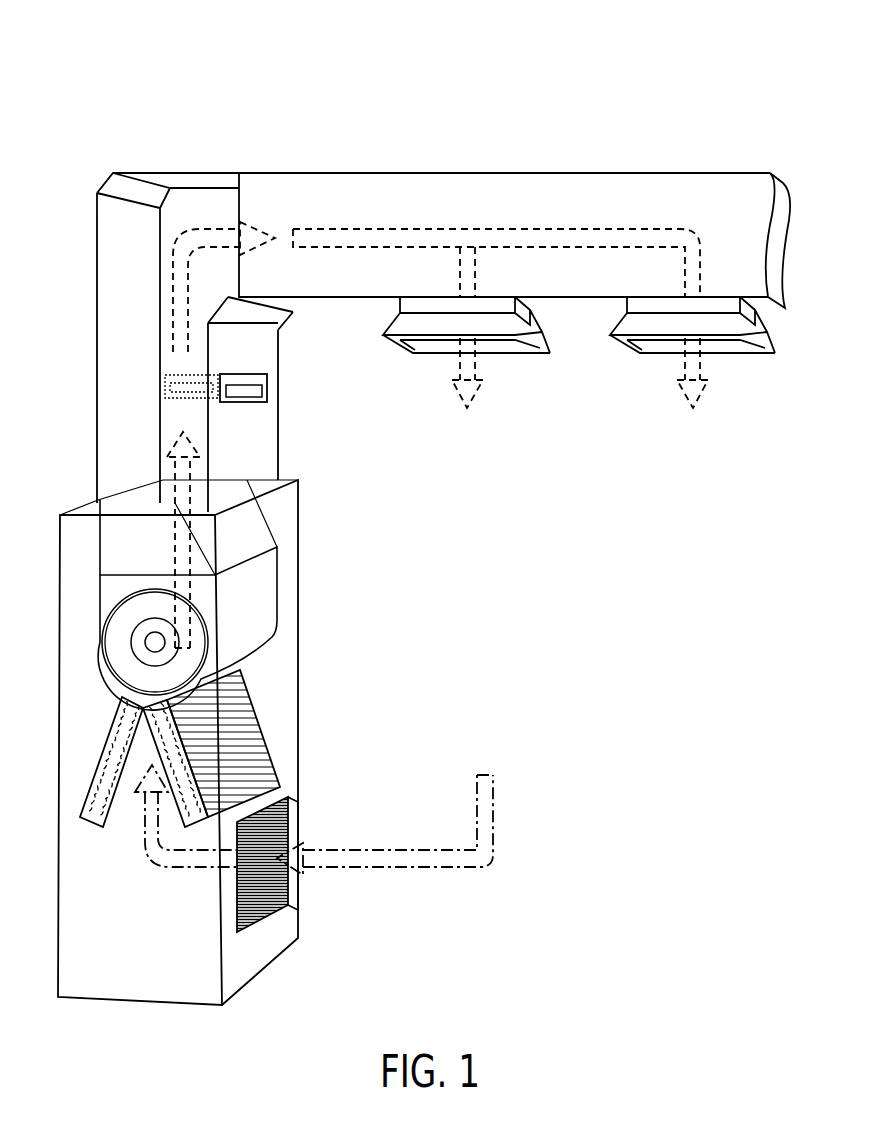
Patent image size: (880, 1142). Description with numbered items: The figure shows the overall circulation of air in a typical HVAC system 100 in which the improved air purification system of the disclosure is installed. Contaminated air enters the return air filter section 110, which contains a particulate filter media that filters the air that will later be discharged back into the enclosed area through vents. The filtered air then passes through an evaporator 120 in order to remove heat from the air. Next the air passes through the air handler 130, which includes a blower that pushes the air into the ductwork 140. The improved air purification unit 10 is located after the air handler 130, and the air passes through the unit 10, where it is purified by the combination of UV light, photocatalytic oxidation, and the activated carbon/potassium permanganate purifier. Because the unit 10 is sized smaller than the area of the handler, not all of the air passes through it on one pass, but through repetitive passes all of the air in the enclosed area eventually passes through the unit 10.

The HVAC system 100 is at (720, 80).
The ductwork 140 is at (118, 433).
The air purification unit 10 is at (262, 380).
The air handler 130 is at (130, 622).
The evaporator 120 is at (98, 765).
The return air filter section 110 is at (290, 823).